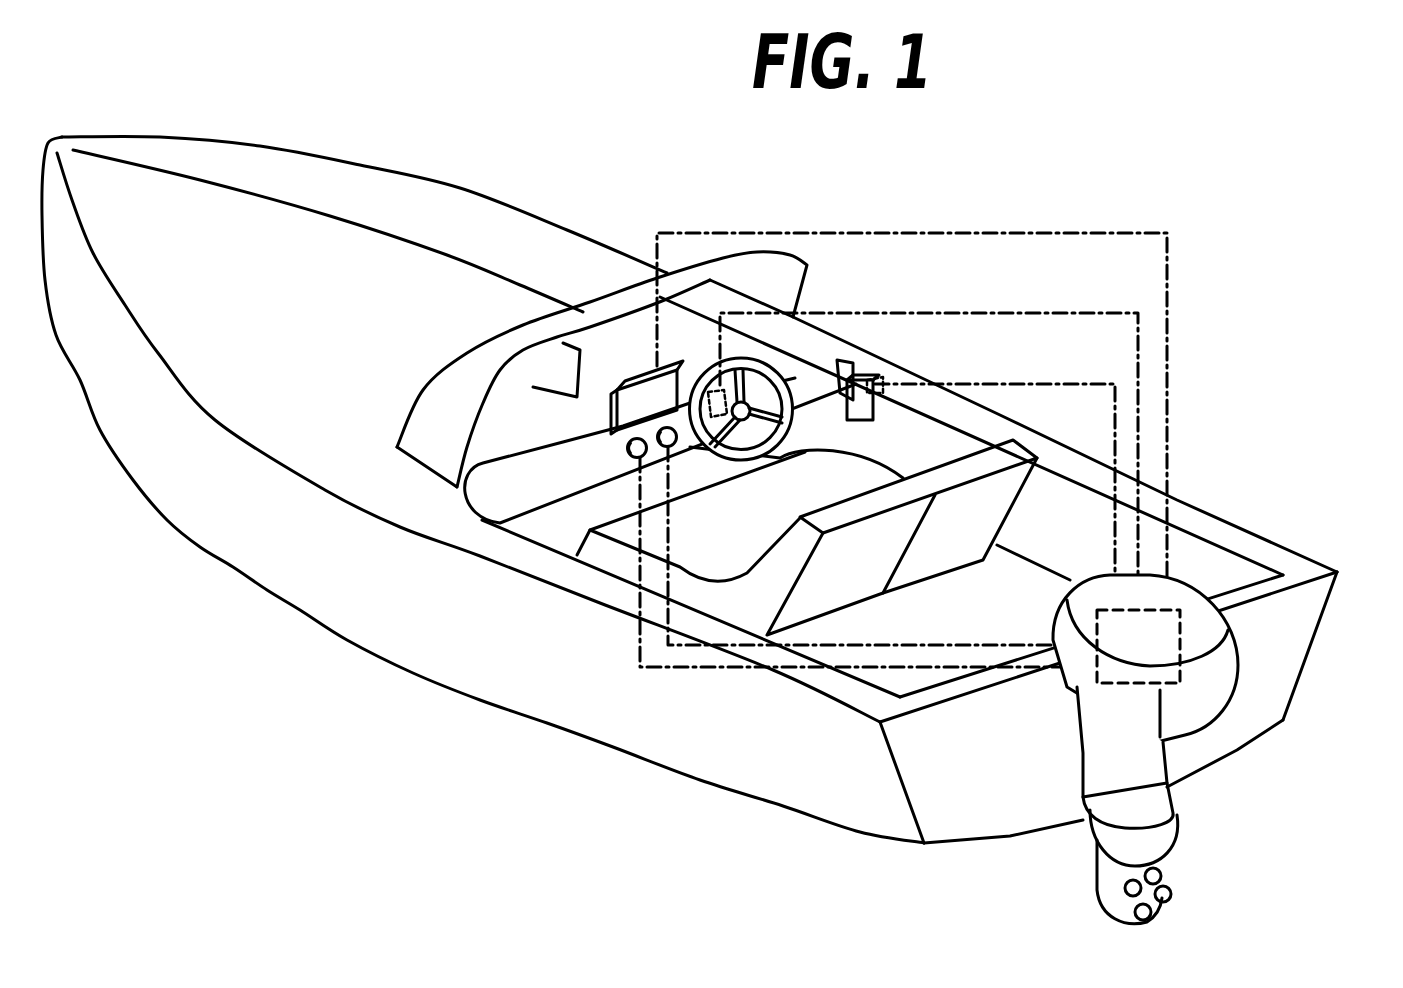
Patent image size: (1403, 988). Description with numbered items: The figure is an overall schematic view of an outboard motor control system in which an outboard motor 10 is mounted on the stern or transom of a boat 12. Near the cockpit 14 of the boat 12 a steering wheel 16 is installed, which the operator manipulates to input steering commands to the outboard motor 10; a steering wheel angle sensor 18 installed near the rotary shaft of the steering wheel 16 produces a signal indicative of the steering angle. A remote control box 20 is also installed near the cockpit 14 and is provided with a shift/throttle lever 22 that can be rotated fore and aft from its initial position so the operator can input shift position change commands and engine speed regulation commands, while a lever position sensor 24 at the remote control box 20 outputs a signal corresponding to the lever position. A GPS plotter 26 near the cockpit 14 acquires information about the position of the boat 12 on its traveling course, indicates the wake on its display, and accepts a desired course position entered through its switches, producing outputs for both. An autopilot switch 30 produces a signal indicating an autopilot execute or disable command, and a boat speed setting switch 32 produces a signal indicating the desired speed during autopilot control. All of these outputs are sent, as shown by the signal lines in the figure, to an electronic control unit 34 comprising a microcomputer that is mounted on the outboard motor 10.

The outboard motor 10 is at (1248, 692).
The boat 12 is at (400, 155).
The cockpit 14 is at (790, 501).
The steering wheel 16 is at (782, 364).
The steering wheel angle sensor 18 is at (696, 432).
The remote control box 20 is at (882, 410).
The shift/throttle lever 22 is at (853, 360).
The lever position sensor 24 is at (893, 355).
The GPS plotter 26 is at (612, 408).
The autopilot switch 30 is at (670, 446).
The boat speed setting switch 32 is at (630, 453).
The electronic control unit 34 is at (1182, 632).